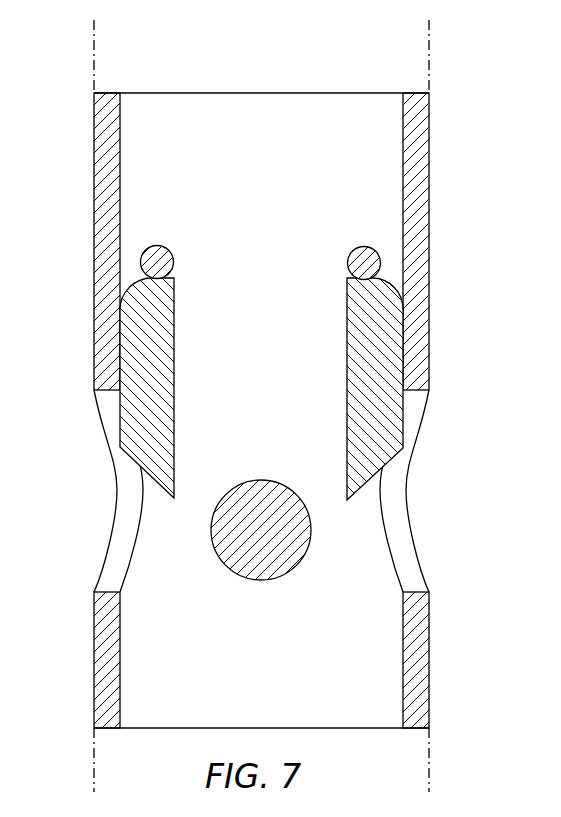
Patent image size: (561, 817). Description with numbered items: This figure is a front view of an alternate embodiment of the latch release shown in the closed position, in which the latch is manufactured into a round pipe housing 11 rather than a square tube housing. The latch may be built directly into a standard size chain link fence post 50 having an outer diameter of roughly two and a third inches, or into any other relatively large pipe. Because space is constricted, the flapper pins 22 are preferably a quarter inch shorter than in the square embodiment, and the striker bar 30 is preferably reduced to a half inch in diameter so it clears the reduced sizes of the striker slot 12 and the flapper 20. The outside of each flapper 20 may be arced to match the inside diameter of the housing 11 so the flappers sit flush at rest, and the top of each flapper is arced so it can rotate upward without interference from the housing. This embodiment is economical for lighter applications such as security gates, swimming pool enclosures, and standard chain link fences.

The chain link fence post 50 is at (430, 35).
The round pipe housing 11 is at (429, 180).
The flapper pins 22 is at (153, 260).
The flapper 20 is at (127, 480).
The striker slot 12 is at (112, 560).
The striker bar 30 is at (258, 480).